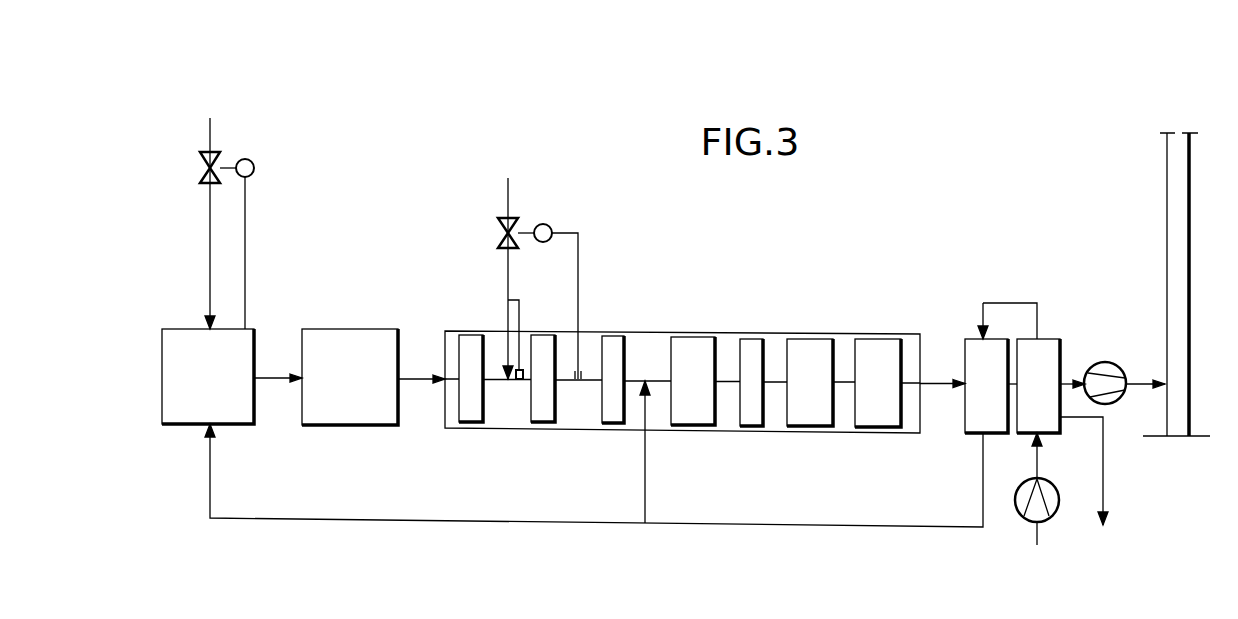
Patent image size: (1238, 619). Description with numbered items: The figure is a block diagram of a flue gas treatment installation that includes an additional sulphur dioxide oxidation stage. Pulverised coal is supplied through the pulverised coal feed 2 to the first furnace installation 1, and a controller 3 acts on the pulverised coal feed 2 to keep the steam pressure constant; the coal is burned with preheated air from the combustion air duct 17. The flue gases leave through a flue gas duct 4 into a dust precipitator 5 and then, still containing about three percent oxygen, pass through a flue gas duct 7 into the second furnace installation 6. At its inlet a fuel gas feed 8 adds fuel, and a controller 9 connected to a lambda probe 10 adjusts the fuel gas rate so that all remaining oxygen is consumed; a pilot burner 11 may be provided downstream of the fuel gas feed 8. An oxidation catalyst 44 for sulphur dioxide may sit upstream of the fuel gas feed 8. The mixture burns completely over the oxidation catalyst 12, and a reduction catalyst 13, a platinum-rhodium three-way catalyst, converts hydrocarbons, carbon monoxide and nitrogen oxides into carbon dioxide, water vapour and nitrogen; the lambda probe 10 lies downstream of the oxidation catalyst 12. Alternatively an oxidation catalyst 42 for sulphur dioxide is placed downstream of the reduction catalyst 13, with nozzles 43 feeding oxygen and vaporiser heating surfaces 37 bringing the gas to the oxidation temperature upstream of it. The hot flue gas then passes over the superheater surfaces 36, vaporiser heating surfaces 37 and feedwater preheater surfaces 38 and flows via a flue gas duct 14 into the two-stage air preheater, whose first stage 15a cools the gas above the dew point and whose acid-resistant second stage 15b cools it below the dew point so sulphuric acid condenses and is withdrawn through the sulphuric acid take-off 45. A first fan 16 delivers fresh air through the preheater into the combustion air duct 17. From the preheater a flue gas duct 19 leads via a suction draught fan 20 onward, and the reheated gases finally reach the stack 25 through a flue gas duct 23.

The first furnace installation 1 is at (185, 397).
The pulverised coal feed 2 is at (210, 250).
The controller 3 is at (222, 157).
The flue gas duct 4 is at (276, 380).
The dust precipitator 5 is at (372, 413).
The second furnace installation 6 is at (650, 332).
The flue gas duct 7 is at (420, 385).
The fuel gas feed 8 is at (508, 385).
The controller 9 is at (517, 220).
The lambda probe 10 is at (578, 385).
The pilot burner 11 is at (520, 315).
The oxidation catalyst 12 is at (545, 412).
The reduction catalyst 13 is at (613, 414).
The flue gas duct 14 is at (935, 386).
The first stage of the air preheater 15a is at (978, 345).
The second stage of the air preheater 15b is at (1050, 345).
The first fan 16 is at (1033, 507).
The combustion air duct 17 is at (908, 528).
The flue gas duct 19 is at (1067, 373).
The suction draught fan 20 is at (1105, 378).
The flue gas duct 23 is at (1137, 386).
The stack 25 is at (1170, 185).
The superheater surfaces 36 is at (810, 415).
The vaporiser heating surfaces 37 is at (701, 415).
The feedwater preheater surfaces 38 is at (878, 417).
The oxidation catalyst 42 is at (753, 415).
The nozzles 43 is at (645, 484).
The oxidation catalyst 44 is at (471, 410).
The sulphuric acid take-off 45 is at (1105, 462).